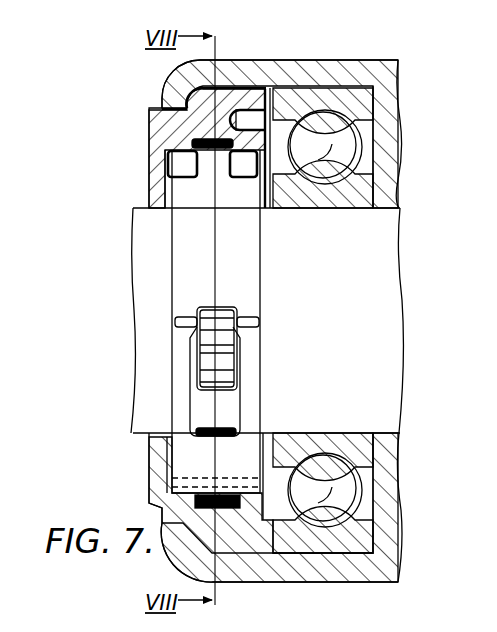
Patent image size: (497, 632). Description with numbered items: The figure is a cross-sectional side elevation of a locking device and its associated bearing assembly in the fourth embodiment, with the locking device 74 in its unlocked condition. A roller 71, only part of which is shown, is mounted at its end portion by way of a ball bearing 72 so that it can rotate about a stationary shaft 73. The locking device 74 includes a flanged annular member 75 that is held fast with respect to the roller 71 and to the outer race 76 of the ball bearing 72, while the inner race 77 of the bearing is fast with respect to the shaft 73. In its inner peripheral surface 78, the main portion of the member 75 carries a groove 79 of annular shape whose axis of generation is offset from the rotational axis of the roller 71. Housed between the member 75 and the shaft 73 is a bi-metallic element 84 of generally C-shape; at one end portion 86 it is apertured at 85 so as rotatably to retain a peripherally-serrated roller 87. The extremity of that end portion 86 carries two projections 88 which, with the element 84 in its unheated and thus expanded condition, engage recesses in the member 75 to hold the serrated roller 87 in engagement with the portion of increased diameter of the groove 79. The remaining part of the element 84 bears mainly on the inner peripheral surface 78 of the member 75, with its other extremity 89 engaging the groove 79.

The roller 71 is at (367, 60).
The ball bearing 72 is at (366, 146).
The stationary shaft 73 is at (341, 328).
The locking device 74 is at (276, 98).
The flanged annular member 75 is at (228, 95).
The outer race 76 is at (375, 108).
The inner race 77 is at (350, 200).
The inner peripheral surface 78 is at (167, 170).
The groove 79 is at (266, 90).
The bi-metallic element 84 is at (190, 452).
The aperture 85 is at (225, 413).
The end portion 86 is at (250, 393).
The peripherally-serrated roller 87 is at (220, 363).
The projections 88 is at (182, 315).
The other extremity 89 is at (205, 157).